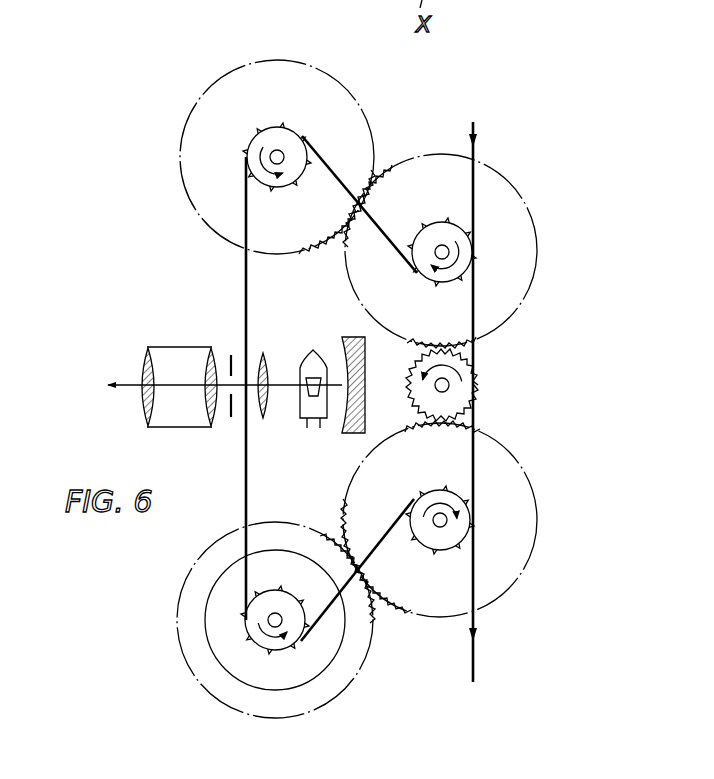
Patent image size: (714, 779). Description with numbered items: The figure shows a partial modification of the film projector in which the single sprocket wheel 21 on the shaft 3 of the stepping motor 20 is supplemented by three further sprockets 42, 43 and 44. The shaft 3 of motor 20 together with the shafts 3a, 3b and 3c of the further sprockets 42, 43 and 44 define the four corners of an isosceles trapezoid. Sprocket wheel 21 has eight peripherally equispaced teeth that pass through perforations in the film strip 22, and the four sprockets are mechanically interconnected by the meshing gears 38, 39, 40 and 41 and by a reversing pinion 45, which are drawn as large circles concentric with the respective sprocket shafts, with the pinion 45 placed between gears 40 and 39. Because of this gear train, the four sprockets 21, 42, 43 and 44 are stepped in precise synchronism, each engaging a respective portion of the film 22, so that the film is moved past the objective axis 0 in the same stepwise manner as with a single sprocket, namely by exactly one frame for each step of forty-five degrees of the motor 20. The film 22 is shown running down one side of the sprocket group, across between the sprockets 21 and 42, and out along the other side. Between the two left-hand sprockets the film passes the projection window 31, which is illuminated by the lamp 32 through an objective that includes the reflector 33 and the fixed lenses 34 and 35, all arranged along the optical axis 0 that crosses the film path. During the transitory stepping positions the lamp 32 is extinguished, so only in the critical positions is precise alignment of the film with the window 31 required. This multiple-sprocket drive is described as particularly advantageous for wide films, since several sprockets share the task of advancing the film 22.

The meshing gear 41 is at (258, 58).
The sprocket 44 is at (272, 137).
The shaft 3c is at (282, 163).
The sprocket 43 is at (438, 233).
The shaft 3b is at (449, 258).
The meshing gear 40 is at (536, 227).
The reversing pinion 45 is at (474, 392).
The sprocket 42 is at (455, 492).
The shaft 3a is at (440, 527).
The meshing gear 39 is at (520, 578).
The meshing gear 38 is at (180, 643).
The motor 20 is at (337, 645).
The sprocket wheel 21 is at (283, 648).
The shaft 3 is at (275, 613).
The film strip 22 is at (474, 647).
The optical axis 0 is at (122, 382).
The fixed lens 35 is at (172, 355).
The projection window 31 is at (230, 355).
The fixed lens 34 is at (267, 357).
The reflector 33 is at (348, 337).
The lamp 32 is at (298, 415).